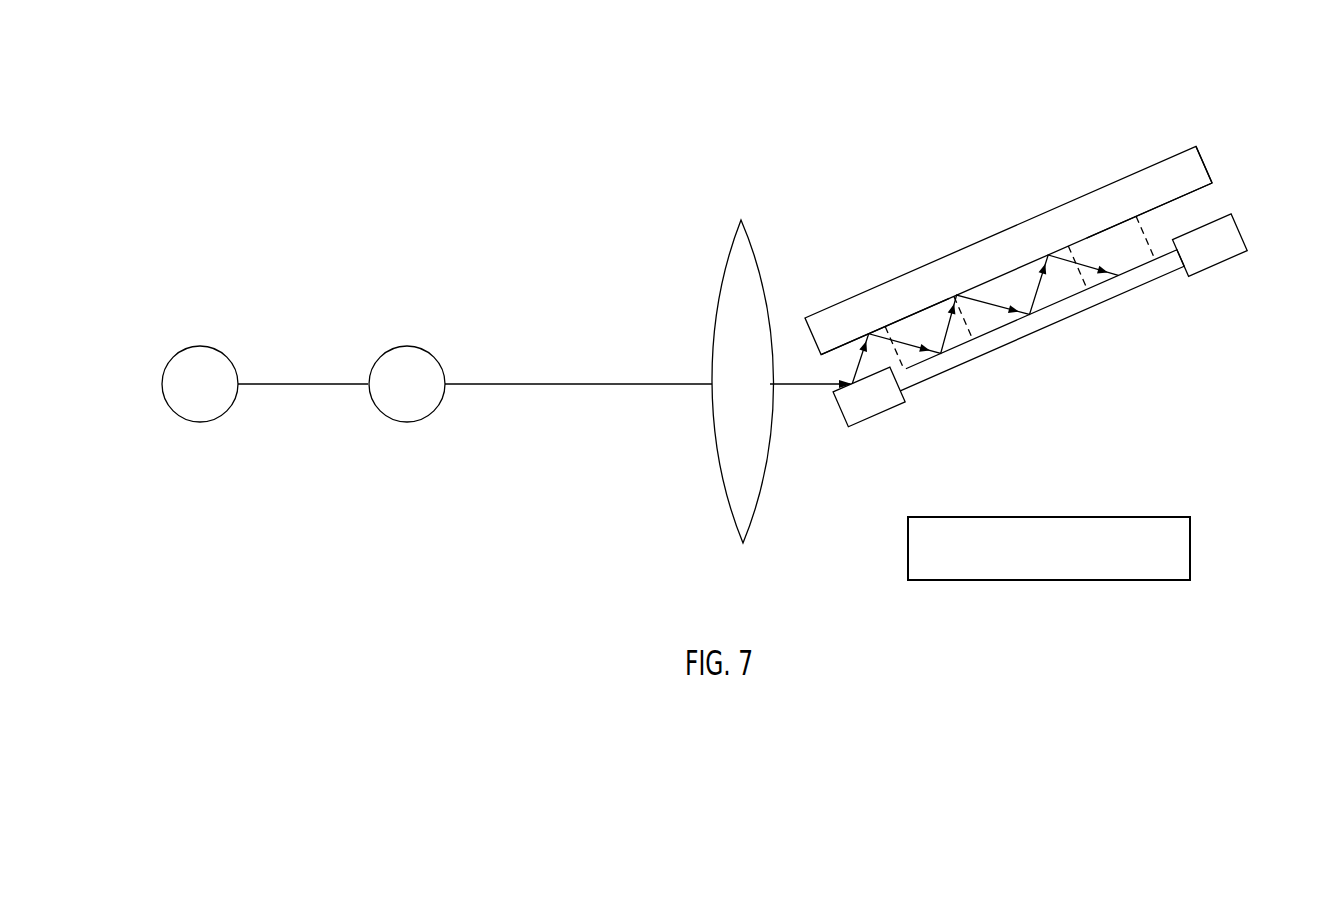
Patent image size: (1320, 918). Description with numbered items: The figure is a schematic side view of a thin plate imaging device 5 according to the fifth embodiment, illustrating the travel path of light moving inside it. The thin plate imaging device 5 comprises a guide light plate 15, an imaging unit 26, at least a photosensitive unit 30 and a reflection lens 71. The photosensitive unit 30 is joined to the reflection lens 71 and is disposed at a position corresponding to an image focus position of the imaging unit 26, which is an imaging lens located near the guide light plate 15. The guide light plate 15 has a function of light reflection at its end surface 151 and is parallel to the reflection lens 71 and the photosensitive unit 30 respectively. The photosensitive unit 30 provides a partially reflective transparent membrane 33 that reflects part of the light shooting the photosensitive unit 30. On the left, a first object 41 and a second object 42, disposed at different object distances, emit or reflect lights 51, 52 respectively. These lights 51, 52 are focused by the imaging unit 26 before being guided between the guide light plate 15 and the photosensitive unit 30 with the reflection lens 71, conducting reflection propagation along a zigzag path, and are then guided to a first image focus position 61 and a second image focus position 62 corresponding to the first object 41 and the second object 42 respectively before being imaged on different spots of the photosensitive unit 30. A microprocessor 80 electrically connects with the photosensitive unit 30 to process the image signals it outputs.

The thin plate imaging device 5 is at (912, 158).
The guide light plate 15 is at (1012, 247).
The imaging unit 26 is at (743, 248).
The photosensitive unit 30 is at (1062, 318).
The partially reflective transparent membrane 33 is at (988, 338).
The first object 41 is at (212, 406).
The second object 42 is at (420, 406).
The light 51 is at (310, 384).
The light 52 is at (563, 384).
The first image focus position 61 is at (918, 317).
The second image focus position 62 is at (1117, 243).
The reflection lens 71 is at (873, 398).
The microprocessor 80 is at (1183, 531).
The end surface 151 is at (1158, 210).